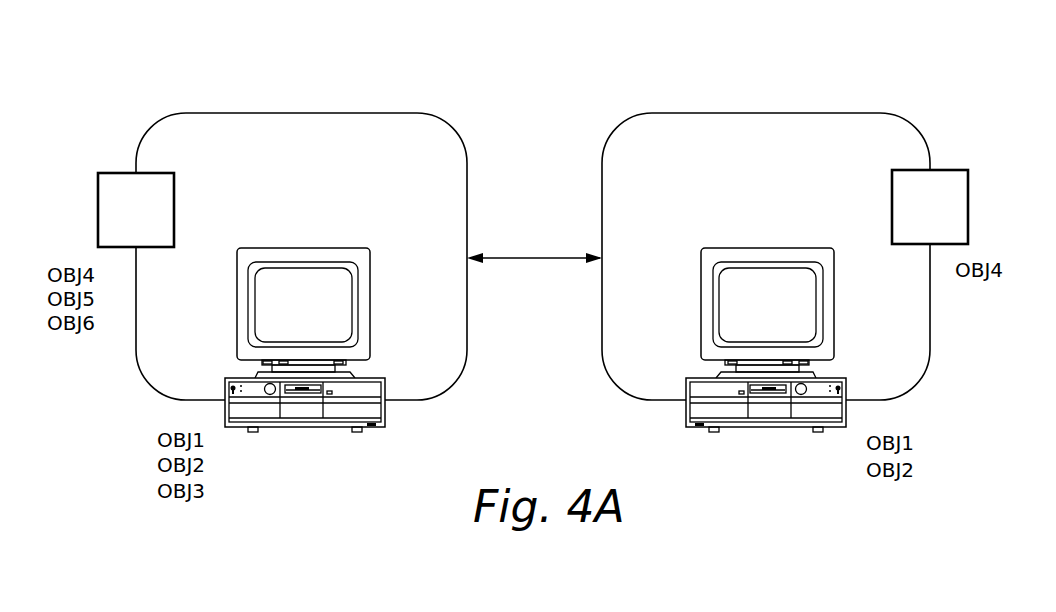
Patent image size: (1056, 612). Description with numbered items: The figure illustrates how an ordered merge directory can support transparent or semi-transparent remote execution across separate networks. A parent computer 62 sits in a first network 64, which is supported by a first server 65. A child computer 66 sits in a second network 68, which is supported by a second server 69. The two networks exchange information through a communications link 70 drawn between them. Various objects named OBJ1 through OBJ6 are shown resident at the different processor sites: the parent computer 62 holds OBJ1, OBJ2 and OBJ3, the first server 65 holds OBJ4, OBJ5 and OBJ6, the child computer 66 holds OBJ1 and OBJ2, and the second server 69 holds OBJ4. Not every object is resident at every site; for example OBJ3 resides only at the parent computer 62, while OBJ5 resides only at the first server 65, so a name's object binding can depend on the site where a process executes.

The parent computer 62 is at (387, 411).
The first network 64 is at (321, 94).
The first server 65 is at (98, 192).
The child computer 66 is at (686, 410).
The second network 68 is at (813, 93).
The second server 69 is at (968, 208).
The communications link 70 is at (537, 256).